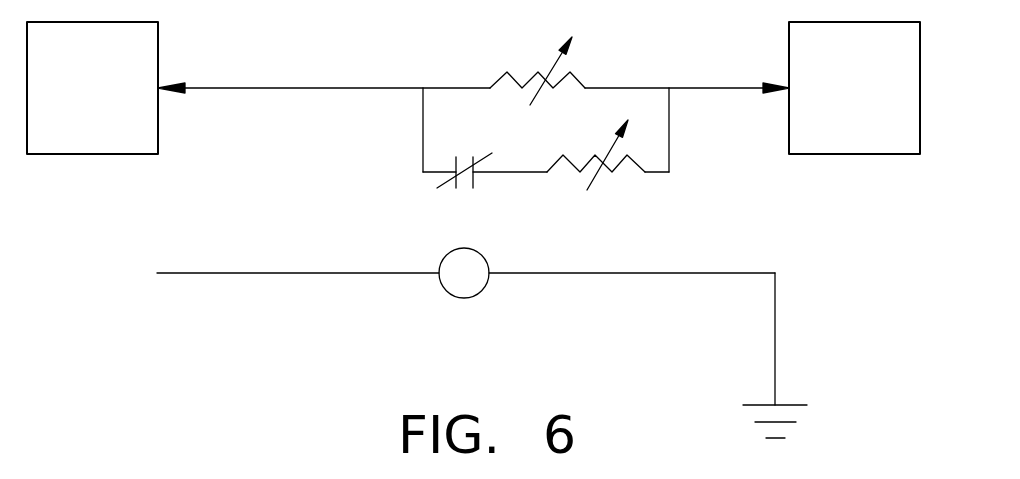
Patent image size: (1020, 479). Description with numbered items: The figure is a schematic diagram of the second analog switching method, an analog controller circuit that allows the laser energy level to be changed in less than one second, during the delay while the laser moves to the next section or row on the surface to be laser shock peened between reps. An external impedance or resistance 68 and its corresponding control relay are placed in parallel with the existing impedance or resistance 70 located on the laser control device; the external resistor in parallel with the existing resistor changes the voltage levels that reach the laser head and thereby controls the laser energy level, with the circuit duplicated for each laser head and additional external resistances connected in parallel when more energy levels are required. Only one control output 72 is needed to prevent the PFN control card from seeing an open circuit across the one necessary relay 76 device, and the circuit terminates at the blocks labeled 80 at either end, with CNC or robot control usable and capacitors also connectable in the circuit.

The electrical load / power source 80 is at (73, 105).
The existing impedance or resistance 70 is at (528, 78).
The external impedance or resistance 68 is at (587, 157).
The relay 76 is at (455, 163).
The control output 72 is at (229, 273).